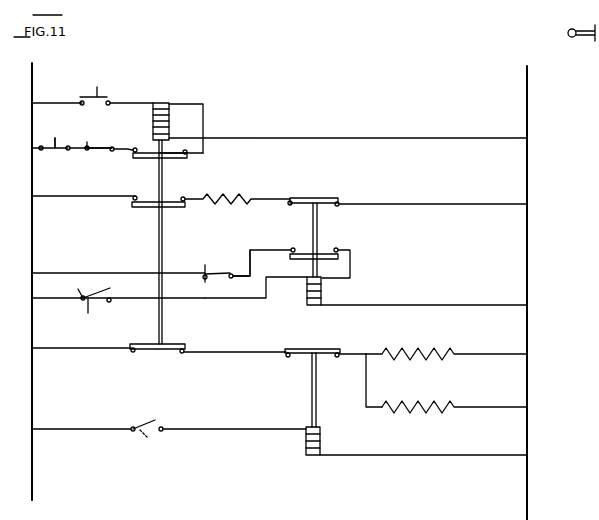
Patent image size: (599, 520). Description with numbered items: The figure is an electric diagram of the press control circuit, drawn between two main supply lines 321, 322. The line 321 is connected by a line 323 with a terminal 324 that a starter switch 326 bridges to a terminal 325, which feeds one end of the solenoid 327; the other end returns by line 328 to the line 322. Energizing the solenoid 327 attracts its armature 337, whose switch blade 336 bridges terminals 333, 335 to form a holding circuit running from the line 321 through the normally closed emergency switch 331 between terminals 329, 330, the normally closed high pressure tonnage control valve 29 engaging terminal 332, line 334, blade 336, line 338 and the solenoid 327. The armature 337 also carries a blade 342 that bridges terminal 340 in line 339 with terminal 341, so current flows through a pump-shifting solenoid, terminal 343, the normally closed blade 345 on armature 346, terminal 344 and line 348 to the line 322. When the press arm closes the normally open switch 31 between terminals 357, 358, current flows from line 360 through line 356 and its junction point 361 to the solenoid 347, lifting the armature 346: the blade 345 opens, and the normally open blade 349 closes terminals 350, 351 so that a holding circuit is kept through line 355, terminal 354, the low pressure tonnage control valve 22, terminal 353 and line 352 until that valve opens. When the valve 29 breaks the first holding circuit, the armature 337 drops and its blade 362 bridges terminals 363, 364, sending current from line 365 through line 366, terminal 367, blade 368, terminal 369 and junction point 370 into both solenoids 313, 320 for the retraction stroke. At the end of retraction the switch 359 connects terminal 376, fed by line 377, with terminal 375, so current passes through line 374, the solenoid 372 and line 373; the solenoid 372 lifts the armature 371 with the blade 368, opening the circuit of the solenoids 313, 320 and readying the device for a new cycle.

The line 323 is at (63, 92).
The terminal 324 is at (80, 106).
The terminal 325 is at (112, 101).
The starter switch 326 is at (101, 95).
The solenoid 327 is at (174, 127).
The line 338 is at (204, 110).
The line 328 is at (248, 138).
The terminal 335 is at (198, 162).
The terminal 333 is at (131, 160).
The switch blade 336 is at (178, 160).
The line 334 is at (130, 148).
The terminal 329 is at (52, 134).
The terminal 330 is at (68, 151).
The emergency switch 331 is at (42, 151).
The terminal 332 is at (110, 152).
The high pressure tonnage control valve 29 is at (100, 146).
The line 339 is at (80, 198).
The terminal 340 is at (133, 201).
The terminal 341 is at (188, 203).
The blade 342 is at (170, 208).
The terminal 343 is at (289, 207).
The terminal 344 is at (339, 207).
The normally closed blade 345 is at (315, 198).
The armature 346 is at (319, 233).
The line 348 is at (466, 206).
The armature 337 is at (158, 244).
The normally open blade 349 is at (301, 260).
The terminal 350 is at (339, 249).
The terminal 351 is at (292, 247).
The junction point 361 is at (335, 280).
The solenoid 347 is at (306, 305).
The line 355 is at (62, 273).
The terminal 354 is at (203, 281).
The low pressure tonnage control valve 22 is at (208, 270).
The terminal 353 is at (230, 279).
The line 352 is at (247, 268).
The line 360 is at (62, 296).
The line 356 is at (227, 301).
The terminal 358 is at (81, 301).
The switch 31 is at (91, 315).
The terminal 357 is at (111, 302).
The blade 362 is at (176, 344).
The line 365 is at (86, 353).
The terminal 363 is at (133, 353).
The terminal 364 is at (182, 354).
The line 366 is at (232, 355).
The terminal 367 is at (287, 360).
The blade 368 is at (316, 349).
The terminal 369 is at (337, 358).
The junction point 370 is at (366, 354).
The solenoid 313 is at (454, 354).
The solenoid 320 is at (449, 408).
The armature 371 is at (318, 411).
The solenoid 372 is at (306, 445).
The line 373 is at (408, 457).
The line 374 is at (248, 428).
The line 377 is at (90, 428).
The terminal 376 is at (132, 431).
The switch 359 is at (147, 420).
The terminal 375 is at (162, 432).
The main supply line 321 is at (32, 490).
The main supply line 322 is at (527, 481).